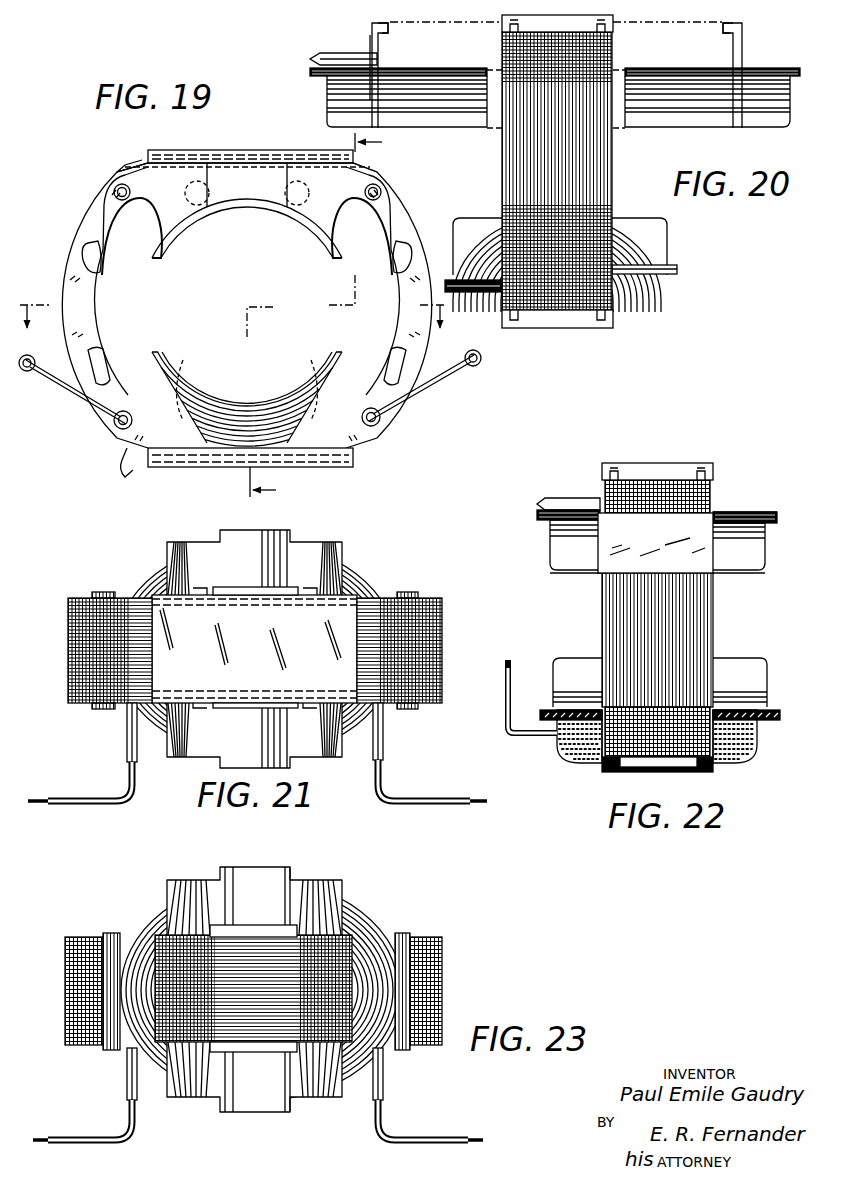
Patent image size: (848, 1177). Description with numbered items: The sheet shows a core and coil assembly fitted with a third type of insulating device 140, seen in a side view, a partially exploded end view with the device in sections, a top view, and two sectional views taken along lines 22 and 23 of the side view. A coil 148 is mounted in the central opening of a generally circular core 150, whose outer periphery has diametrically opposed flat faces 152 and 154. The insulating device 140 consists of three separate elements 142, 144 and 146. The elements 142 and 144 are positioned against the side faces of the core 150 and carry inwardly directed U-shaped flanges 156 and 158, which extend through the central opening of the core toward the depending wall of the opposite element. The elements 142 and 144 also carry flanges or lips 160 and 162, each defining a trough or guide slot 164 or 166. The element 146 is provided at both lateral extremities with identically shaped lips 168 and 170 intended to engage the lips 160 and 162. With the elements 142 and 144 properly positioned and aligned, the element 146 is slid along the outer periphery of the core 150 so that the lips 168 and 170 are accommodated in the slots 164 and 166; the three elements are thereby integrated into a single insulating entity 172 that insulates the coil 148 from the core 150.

In FIG. 19, the insulating device 140 is at (145, 152).
In FIG. 22, the insulating device 140 is at (733, 573).
In FIG. 20, the element 142 is at (430, 54).
In FIG. 22, the element 142 is at (548, 549).
In FIG. 20, the element 144 is at (692, 67).
In FIG. 22, the element 144 is at (769, 556).
In FIG. 20, the element 146 is at (530, 24).
In FIG. 21, the element 146 is at (272, 658).
In FIG. 22, the element 146 is at (676, 440).
In FIG. 19, the coil 148 is at (338, 362).
In FIG. 20, the coil 148 is at (650, 295).
In FIG. 21, the coil 148 is at (380, 561).
In FIG. 22, the coil 148 is at (581, 758).
In FIG. 23, the coil 148 is at (357, 886).
In FIG. 19, the core 150 is at (385, 200).
In FIG. 20, the core 150 is at (613, 180).
In FIG. 21, the core 150 is at (443, 631).
In FIG. 22, the core 150 is at (602, 613).
In FIG. 23, the core 150 is at (442, 1002).
In FIG. 19, the flat face 152 is at (120, 168).
In FIG. 19, the flat face 154 is at (131, 468).
In FIG. 20, the U-shaped flange 156 is at (450, 130).
In FIG. 20, the U-shaped flange 158 is at (684, 128).
In FIG. 20, the lip 160 is at (392, 30).
In FIG. 22, the lip 160 is at (620, 462).
In FIG. 20, the lip 162 is at (723, 24).
In FIG. 22, the lip 162 is at (696, 463).
In FIG. 20, the guide slot 164 is at (372, 29).
In FIG. 20, the guide slot 166 is at (742, 26).
In FIG. 20, the lip 168 is at (502, 25).
In FIG. 20, the lip 170 is at (613, 28).
In FIG. 19, the insulating entity 172 is at (290, 133).
In FIG. 21, the insulating entity 172 is at (330, 538).
In FIG. 22, the insulating entity 172 is at (727, 503).
In FIG. 23, the insulating entity 172 is at (318, 850).
In FIG. 19, the section line 22— 22 is at (326, 317).
In FIG. 19, the section line 23— 23 is at (235, 328).